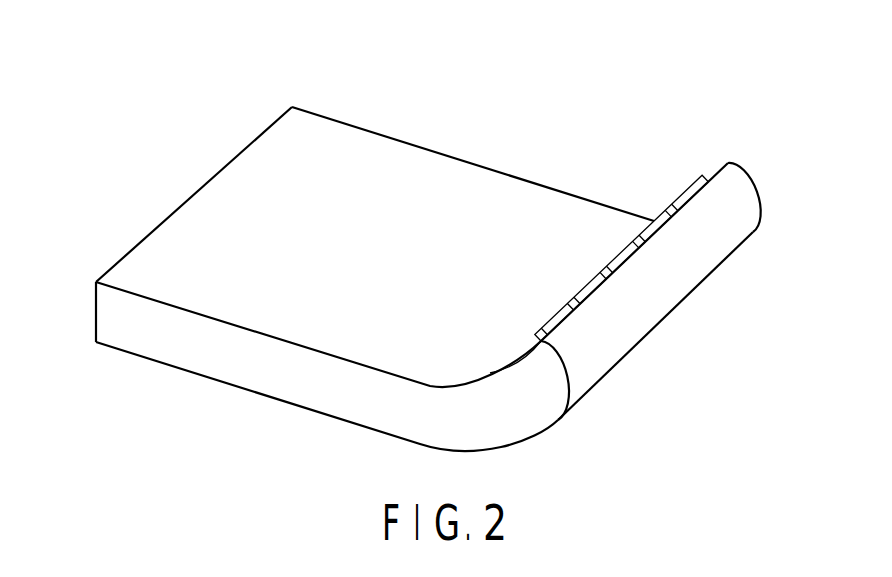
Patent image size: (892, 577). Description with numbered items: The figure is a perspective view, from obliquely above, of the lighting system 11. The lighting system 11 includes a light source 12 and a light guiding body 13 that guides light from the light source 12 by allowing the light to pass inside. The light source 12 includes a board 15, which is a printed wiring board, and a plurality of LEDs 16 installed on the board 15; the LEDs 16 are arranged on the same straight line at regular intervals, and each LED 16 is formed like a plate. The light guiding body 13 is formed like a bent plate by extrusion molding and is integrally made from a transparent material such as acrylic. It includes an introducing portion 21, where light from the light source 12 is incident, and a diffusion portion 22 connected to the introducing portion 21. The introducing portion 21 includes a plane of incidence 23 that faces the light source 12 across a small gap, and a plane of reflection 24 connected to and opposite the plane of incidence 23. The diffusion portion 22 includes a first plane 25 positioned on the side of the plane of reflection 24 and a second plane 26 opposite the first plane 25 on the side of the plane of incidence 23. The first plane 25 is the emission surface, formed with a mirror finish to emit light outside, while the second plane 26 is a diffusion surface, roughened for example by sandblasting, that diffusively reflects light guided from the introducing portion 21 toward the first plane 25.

The lighting system 11 is at (428, 254).
The light source 12 is at (631, 281).
The light guiding body 13 is at (375, 264).
The board 15 is at (657, 217).
The LEDs 16 is at (605, 225).
The introducing portion 21 is at (547, 408).
The diffusion portion 22 is at (327, 374).
The plane of incidence 23 is at (536, 347).
The plane of reflection 24 is at (660, 303).
The first plane 25 is at (303, 410).
The second plane 26 is at (330, 263).